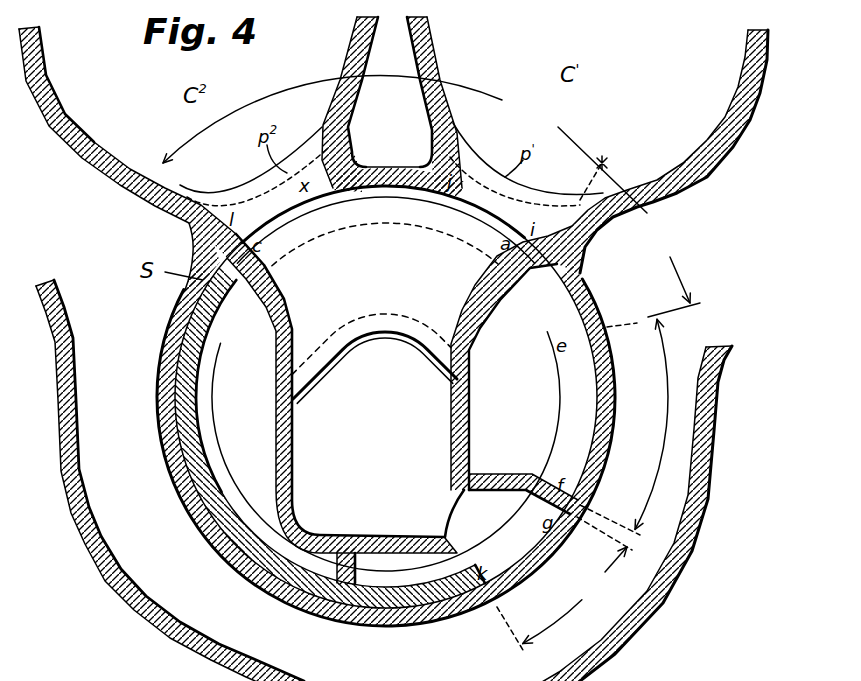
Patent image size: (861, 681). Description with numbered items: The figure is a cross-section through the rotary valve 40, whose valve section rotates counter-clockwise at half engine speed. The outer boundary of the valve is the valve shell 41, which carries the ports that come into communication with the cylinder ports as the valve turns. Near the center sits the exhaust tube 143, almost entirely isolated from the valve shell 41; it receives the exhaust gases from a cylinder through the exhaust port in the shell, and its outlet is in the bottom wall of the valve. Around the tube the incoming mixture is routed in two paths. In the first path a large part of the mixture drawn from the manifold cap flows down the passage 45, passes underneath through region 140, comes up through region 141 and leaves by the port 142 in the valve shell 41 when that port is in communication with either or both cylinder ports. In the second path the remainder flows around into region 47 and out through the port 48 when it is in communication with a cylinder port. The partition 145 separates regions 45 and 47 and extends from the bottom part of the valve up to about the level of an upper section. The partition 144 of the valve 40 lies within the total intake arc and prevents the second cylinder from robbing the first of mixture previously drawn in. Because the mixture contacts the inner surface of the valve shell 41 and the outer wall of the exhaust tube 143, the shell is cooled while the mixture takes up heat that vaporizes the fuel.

The valve 40 is at (283, 520).
The valve shell 41 is at (583, 310).
The passage 45 is at (245, 383).
The region 47 is at (386, 397).
The port 48 is at (353, 437).
The region 140 is at (391, 229).
The region 141 is at (515, 404).
The port 142 is at (582, 351).
The exhaust tube 143 is at (374, 388).
The partition 144 is at (350, 200).
The partition 145 is at (340, 572).